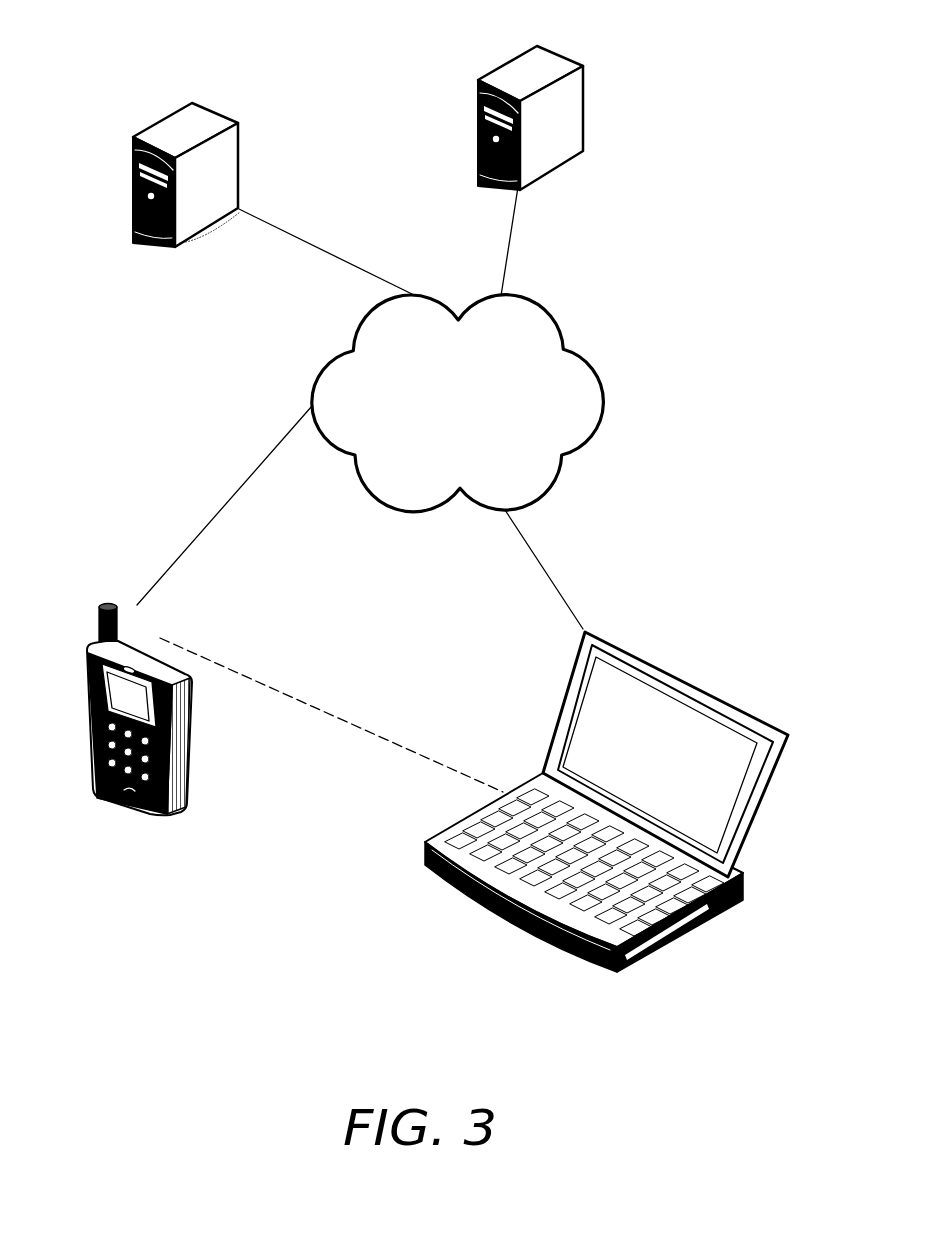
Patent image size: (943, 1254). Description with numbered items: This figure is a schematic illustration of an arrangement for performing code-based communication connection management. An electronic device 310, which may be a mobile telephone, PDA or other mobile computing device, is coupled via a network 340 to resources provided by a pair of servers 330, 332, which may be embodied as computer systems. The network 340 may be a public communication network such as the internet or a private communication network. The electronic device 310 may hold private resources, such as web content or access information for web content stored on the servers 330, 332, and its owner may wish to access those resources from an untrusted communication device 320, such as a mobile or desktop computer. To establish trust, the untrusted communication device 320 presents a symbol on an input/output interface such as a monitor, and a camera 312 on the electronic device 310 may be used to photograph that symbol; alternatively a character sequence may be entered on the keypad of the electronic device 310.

The electronic device 310 is at (232, 847).
The camera 312 is at (133, 667).
The untrusted communication device 320 is at (810, 999).
The server 330 is at (240, 279).
The server 332 is at (595, 37).
The network 340 is at (522, 416).